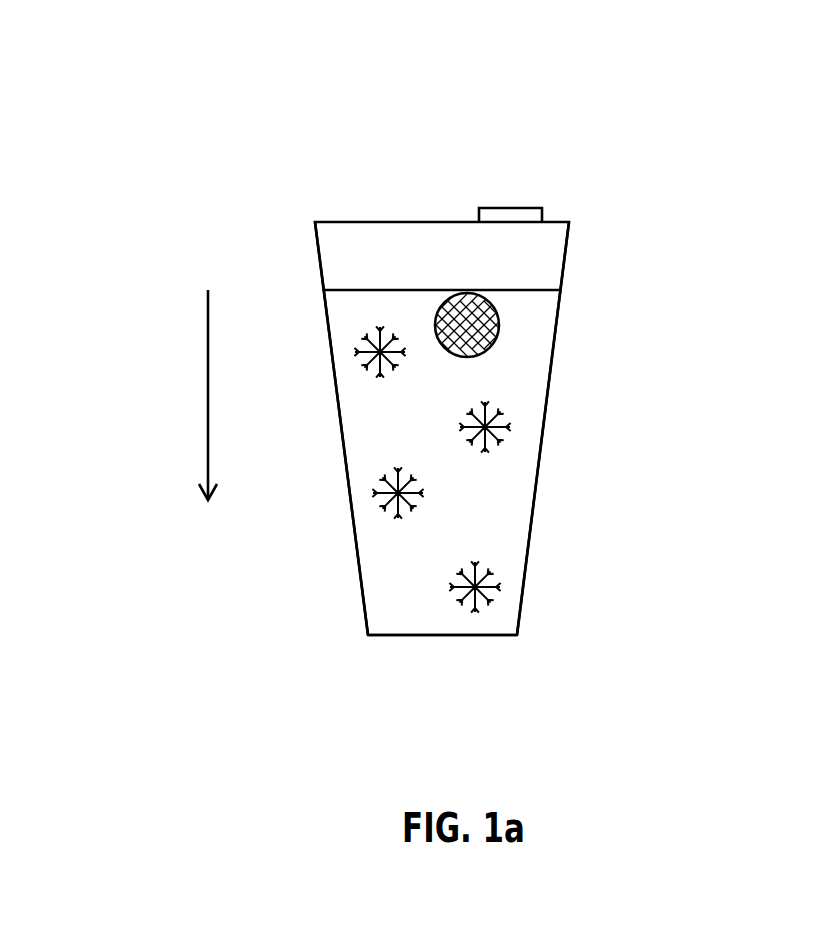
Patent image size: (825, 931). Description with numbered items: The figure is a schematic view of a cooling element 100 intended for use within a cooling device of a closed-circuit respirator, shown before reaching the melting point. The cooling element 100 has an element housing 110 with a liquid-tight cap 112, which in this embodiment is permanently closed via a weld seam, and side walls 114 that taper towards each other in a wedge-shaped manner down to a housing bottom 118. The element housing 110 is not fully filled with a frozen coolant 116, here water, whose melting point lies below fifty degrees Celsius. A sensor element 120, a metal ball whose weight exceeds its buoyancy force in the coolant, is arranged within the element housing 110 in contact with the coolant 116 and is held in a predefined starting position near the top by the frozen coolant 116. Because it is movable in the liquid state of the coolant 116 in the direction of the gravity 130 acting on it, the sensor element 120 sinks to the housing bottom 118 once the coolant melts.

The cooling element 100 is at (672, 168).
The element housing 110 is at (548, 388).
The liquid-tight cap 112 is at (508, 207).
The side walls 114 is at (539, 457).
The frozen coolant 116 is at (497, 537).
The housing bottom 118 is at (490, 637).
The sensor element 120 is at (478, 327).
The gravity 130 is at (207, 405).